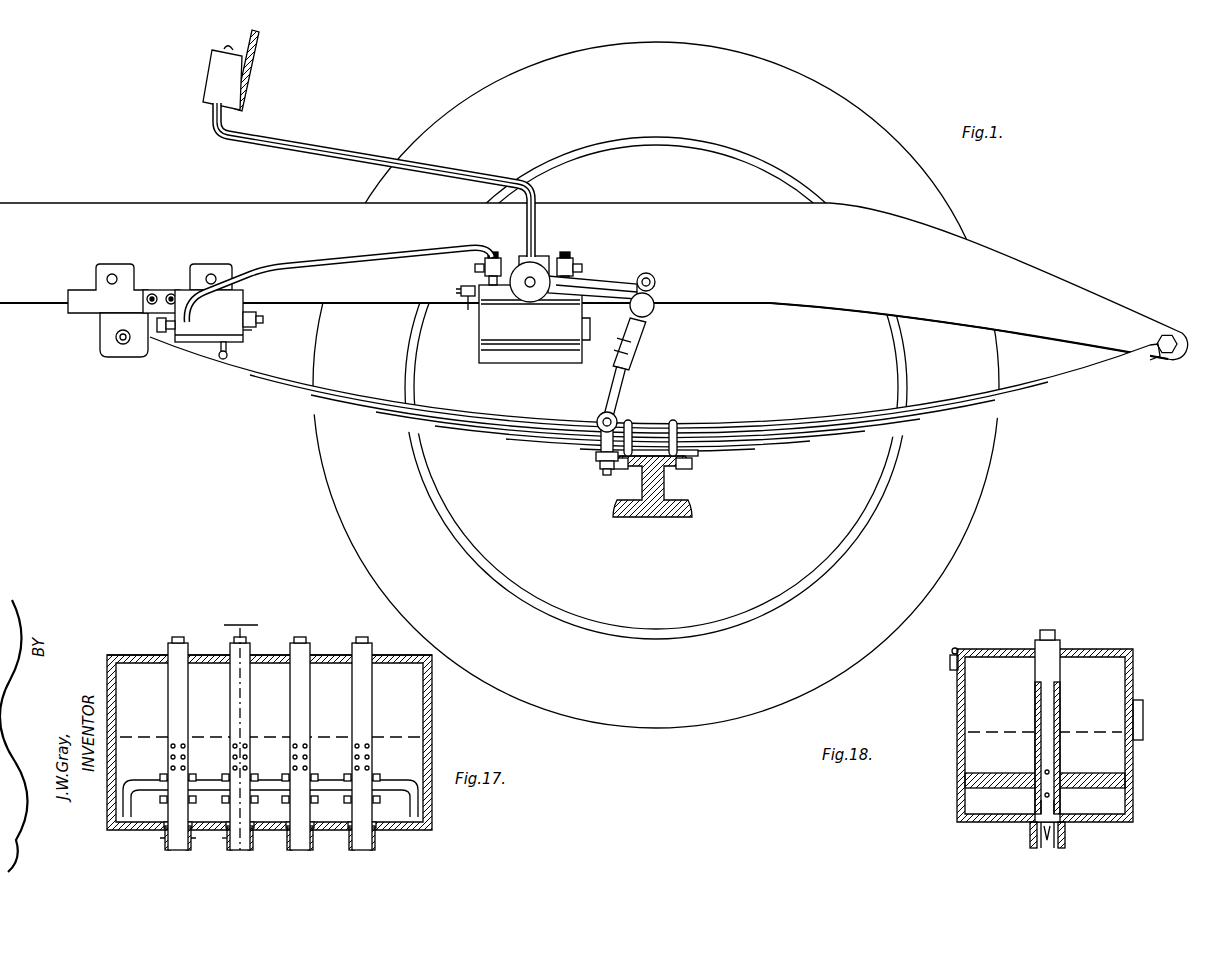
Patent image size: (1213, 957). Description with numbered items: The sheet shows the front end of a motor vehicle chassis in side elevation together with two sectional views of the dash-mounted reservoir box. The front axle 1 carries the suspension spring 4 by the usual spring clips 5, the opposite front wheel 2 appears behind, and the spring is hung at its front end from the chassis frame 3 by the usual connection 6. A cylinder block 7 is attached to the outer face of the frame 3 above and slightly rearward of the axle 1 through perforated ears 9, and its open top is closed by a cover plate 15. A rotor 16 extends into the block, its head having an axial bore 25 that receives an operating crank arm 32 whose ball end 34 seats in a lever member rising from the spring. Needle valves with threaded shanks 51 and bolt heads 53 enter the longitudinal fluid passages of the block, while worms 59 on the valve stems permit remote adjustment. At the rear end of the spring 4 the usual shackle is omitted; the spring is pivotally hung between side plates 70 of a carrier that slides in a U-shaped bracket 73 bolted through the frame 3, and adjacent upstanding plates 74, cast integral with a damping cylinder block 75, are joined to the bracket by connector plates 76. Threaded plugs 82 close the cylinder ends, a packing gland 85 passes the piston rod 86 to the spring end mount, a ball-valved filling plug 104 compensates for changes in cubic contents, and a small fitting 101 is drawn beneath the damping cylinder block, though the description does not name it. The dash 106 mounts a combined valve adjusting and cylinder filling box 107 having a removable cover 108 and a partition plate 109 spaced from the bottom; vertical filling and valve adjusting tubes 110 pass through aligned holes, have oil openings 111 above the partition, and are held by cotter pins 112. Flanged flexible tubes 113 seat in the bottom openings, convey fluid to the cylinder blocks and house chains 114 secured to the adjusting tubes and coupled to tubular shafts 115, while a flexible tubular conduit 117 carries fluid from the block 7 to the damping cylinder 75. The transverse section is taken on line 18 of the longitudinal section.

In FIG. 1, the front axle 1 is at (666, 492).
In FIG. 1, the front wheel 2 is at (892, 532).
In FIG. 1, the chassis frame 3 is at (219, 204).
In FIG. 1, the suspension spring 4 is at (776, 421).
In FIG. 1, the spring clips 5 is at (630, 420).
In FIG. 1, the spring connection 6 is at (1165, 333).
In FIG. 1, the cylinder block 7 is at (510, 366).
In FIG. 1, the ears 9 is at (475, 268).
In FIG. 1, the cover plate 15 is at (541, 257).
In FIG. 1, the rotor 16 is at (538, 300).
In FIG. 1, the axial bore 25 is at (527, 286).
In FIG. 1, the crank arm 32 is at (605, 291).
In FIG. 1, the ball end 34 is at (655, 303).
In FIG. 1, the threaded shanks 51 is at (468, 304).
In FIG. 1, the bolt heads 53 is at (463, 296).
In FIG. 1, the worms 59 is at (493, 258).
In FIG. 1, the side plates 70 is at (110, 350).
In FIG. 1, the U-shaped bracket 73 is at (88, 297).
In FIG. 1, the upstanding plates 74 is at (222, 268).
In FIG. 1, the damping cylinder block 75 is at (252, 330).
In FIG. 1, the connector plates 76 is at (158, 290).
In FIG. 1, the threaded plugs 82 is at (262, 318).
In FIG. 1, the packing gland 85 is at (168, 332).
In FIG. 1, the piston rod 86 is at (164, 332).
In FIG. 1, the valve 101 is at (232, 355).
In FIG. 1, the filling plug 104 is at (245, 313).
In FIG. 1, the dash 106 is at (246, 82).
In FIG. 1, the valve adjusting and cylinder filling box 107 is at (211, 92).
In FIG. 17, the valve adjusting and cylinder filling box 107 is at (432, 713).
In FIG. 17, the removable cover 108 is at (430, 689).
In FIG. 18, the removable cover 108 is at (1128, 659).
In FIG. 17, the partition plate 109 is at (385, 789).
In FIG. 18, the partition plate 109 is at (966, 781).
In FIG. 17, the filling and valve adjusting tubes 110 is at (238, 687).
In FIG. 18, the filling and valve adjusting tubes 110 is at (1050, 672).
In FIG. 17, the oil openings 111 is at (234, 748).
In FIG. 18, the oil openings 111 is at (1062, 745).
In FIG. 17, the cotter pins 112 is at (257, 794).
In FIG. 18, the cotter pins 112 is at (1058, 801).
In FIG. 1, the flexible tubes 113 is at (373, 154).
In FIG. 17, the flexible tubes 113 is at (160, 848).
In FIG. 18, the flexible tubes 113 is at (1030, 838).
In FIG. 17, the chains 114 is at (165, 840).
In FIG. 18, the chains 114 is at (1066, 838).
In FIG. 17, the tubular shafts 115 is at (236, 836).
In FIG. 1, the flexible tubular conduit 117 is at (379, 260).
In FIG. 17, the section line 18 is at (241, 728).